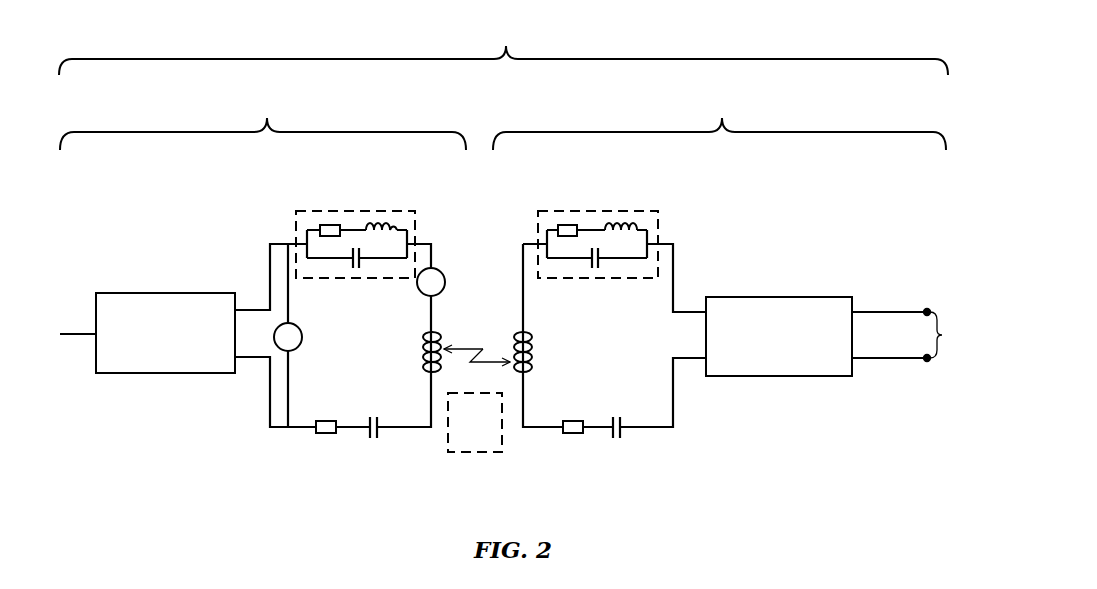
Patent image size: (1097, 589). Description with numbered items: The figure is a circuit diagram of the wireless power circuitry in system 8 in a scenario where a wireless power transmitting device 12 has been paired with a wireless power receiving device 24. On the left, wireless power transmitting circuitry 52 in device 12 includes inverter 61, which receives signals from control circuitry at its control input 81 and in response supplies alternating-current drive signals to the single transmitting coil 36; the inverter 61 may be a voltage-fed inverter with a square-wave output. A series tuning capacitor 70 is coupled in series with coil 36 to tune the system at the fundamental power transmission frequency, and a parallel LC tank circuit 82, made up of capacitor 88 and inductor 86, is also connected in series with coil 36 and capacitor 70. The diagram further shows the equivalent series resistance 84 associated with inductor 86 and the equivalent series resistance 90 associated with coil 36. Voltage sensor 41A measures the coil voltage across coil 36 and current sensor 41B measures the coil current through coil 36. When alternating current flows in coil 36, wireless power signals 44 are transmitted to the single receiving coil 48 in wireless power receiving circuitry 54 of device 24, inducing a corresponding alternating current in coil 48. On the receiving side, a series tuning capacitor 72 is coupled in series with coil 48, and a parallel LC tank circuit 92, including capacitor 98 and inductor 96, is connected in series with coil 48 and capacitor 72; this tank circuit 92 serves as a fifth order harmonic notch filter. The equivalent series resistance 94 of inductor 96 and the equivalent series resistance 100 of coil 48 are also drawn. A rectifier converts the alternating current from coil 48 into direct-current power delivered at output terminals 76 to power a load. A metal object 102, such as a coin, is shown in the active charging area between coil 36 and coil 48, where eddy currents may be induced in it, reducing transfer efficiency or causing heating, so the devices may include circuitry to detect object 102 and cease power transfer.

The wireless power system 8 is at (503, 49).
The wireless power transmitting device 12 is at (263, 122).
The wireless power receiving device 24 is at (719, 122).
The transmitting coil 36 is at (418, 352).
The voltage sensor 41A is at (303, 335).
The current sensor 41B is at (445, 277).
The wireless power signals 44 is at (483, 349).
The receiving coil 48 is at (540, 350).
The wireless power transmitting circuitry 52 is at (237, 425).
The wireless power receiving circuitry 54 is at (763, 391).
The inverter circuitry 61 is at (166, 373).
The series tuning capacitor 70 is at (374, 449).
The series tuning capacitor 72 is at (619, 449).
The output terminals 76 is at (913, 335).
The control input 81 is at (66, 345).
The parallel LC tank circuit 82 is at (296, 228).
The equivalent series resistance 84 is at (331, 224).
The inductor 86 is at (383, 217).
The capacitor 88 is at (344, 265).
The equivalent series resistance 90 is at (323, 434).
The parallel LC tank circuit 92 is at (658, 228).
The equivalent series resistance 94 is at (567, 224).
The inductor 96 is at (622, 216).
The capacitor 98 is at (607, 265).
The equivalent series resistance 100 is at (572, 434).
The metal object 102 is at (471, 452).